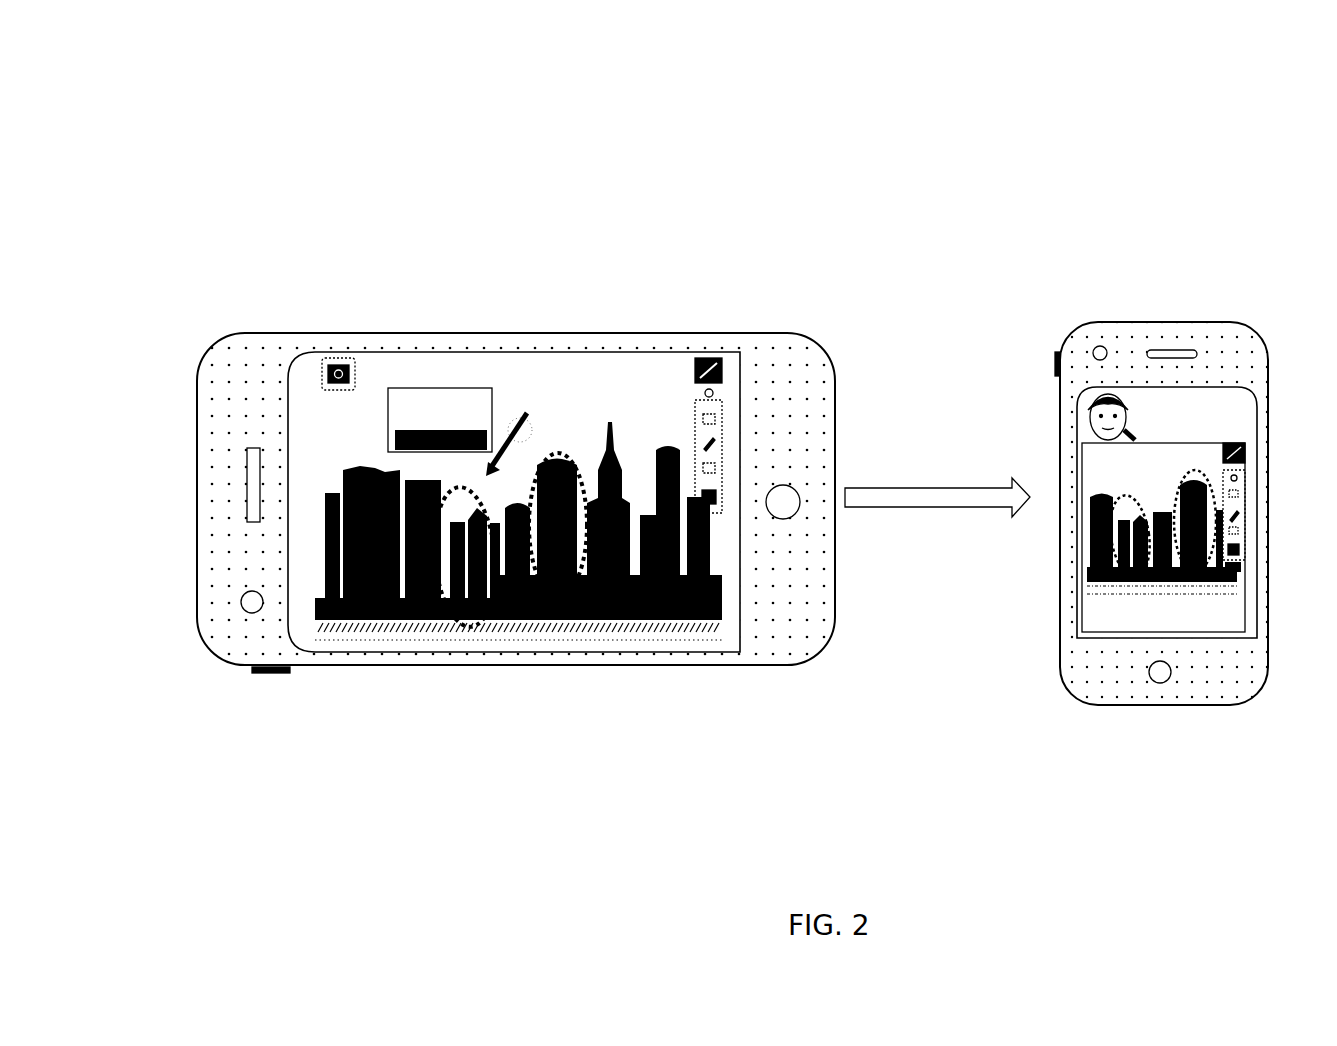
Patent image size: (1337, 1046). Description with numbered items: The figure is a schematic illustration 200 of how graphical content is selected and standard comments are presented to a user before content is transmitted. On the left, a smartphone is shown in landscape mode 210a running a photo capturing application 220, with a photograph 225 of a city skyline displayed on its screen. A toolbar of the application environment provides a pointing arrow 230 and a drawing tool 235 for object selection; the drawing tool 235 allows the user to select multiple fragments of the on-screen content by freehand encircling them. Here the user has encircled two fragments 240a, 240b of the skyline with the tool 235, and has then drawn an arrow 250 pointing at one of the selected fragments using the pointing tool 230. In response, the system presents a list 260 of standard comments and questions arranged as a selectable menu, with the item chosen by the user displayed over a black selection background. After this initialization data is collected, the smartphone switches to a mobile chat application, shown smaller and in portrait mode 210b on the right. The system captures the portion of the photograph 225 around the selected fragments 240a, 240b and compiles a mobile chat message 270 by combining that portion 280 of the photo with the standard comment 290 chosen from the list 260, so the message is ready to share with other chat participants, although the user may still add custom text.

The schematic illustration 200 is at (1296, 139).
The smartphone in landscape mode 210a is at (202, 340).
The smartphone in portrait mode 210b is at (1043, 361).
The photo capturing application 220 is at (307, 360).
The photograph 225 is at (353, 628).
The pointing arrow 230 is at (695, 365).
The drawing tool 235 is at (700, 440).
The first fragment 240a is at (492, 623).
The second fragment 240b is at (587, 620).
The arrow 250 is at (510, 410).
The list of standard comments 260 is at (438, 385).
The mobile chat message 270 is at (1098, 470).
The portion of the photo 280 is at (1085, 525).
The standard comment 290 is at (1087, 617).